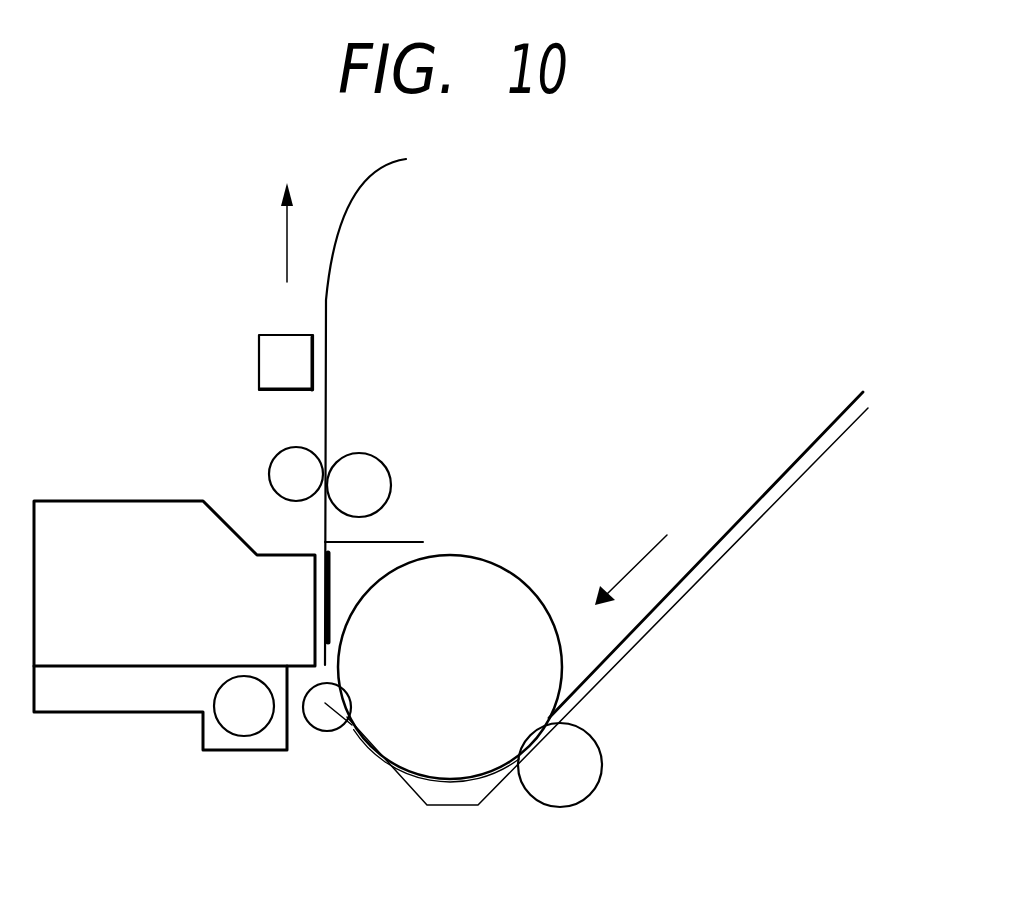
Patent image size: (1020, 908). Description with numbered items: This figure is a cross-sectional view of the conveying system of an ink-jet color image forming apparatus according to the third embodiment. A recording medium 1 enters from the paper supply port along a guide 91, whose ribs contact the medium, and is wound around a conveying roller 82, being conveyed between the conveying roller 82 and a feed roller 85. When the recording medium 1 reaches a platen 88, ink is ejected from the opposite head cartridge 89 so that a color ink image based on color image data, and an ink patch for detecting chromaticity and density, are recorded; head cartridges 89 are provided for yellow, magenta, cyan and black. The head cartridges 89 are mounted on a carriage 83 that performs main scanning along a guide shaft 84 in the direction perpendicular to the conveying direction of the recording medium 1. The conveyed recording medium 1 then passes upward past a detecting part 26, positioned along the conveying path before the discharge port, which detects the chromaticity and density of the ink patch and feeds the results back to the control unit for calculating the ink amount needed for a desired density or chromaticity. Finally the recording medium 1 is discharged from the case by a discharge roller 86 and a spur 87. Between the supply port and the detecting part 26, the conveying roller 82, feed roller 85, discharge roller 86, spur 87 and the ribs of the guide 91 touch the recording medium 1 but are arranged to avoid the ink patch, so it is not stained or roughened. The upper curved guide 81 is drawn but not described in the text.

The recording medium 1 is at (808, 447).
The detecting part 26 is at (258, 356).
The guide 81 is at (330, 262).
The conveying roller 82 is at (498, 566).
The carriage 83 is at (77, 713).
The guide shaft 84 is at (242, 730).
The feed roller 85 is at (325, 724).
The discharge roller 86 is at (365, 453).
The spur 87 is at (274, 458).
The platen 88 is at (413, 541).
The head cartridge 89 is at (98, 500).
The guide 91 is at (753, 526).